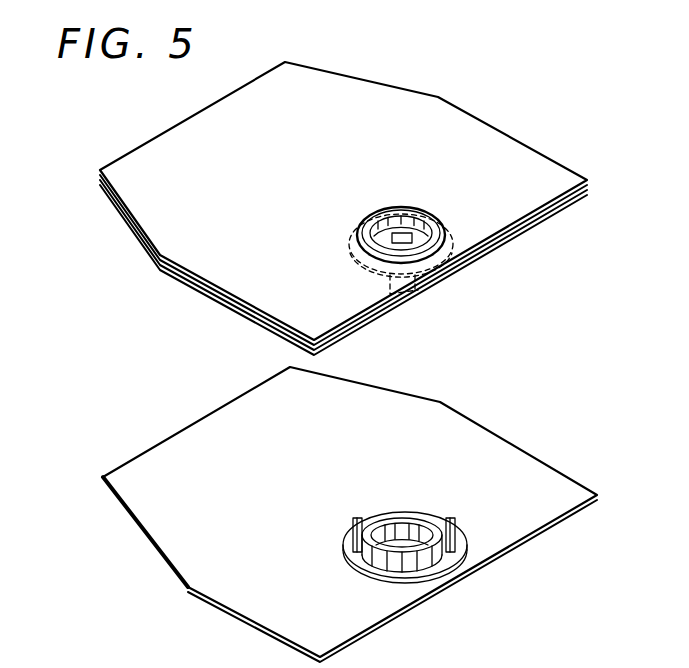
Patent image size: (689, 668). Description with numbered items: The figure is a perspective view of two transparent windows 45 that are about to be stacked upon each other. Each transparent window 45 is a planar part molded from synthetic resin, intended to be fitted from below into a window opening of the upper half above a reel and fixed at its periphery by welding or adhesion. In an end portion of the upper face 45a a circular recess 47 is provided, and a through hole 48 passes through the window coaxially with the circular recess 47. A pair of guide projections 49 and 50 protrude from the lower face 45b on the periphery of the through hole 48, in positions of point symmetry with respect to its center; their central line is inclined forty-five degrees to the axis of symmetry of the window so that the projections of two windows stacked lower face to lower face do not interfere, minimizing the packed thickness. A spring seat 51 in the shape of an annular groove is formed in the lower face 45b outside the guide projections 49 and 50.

The transparent window 45 is at (334, 345).
The upper face 45a is at (182, 130).
The lower face 45b is at (172, 227).
The circular recess 47 is at (350, 241).
The through hole 48 is at (422, 232).
The guide projection 49 is at (418, 290).
The guide projection 50 is at (405, 230).
The spring seat 51 is at (460, 553).